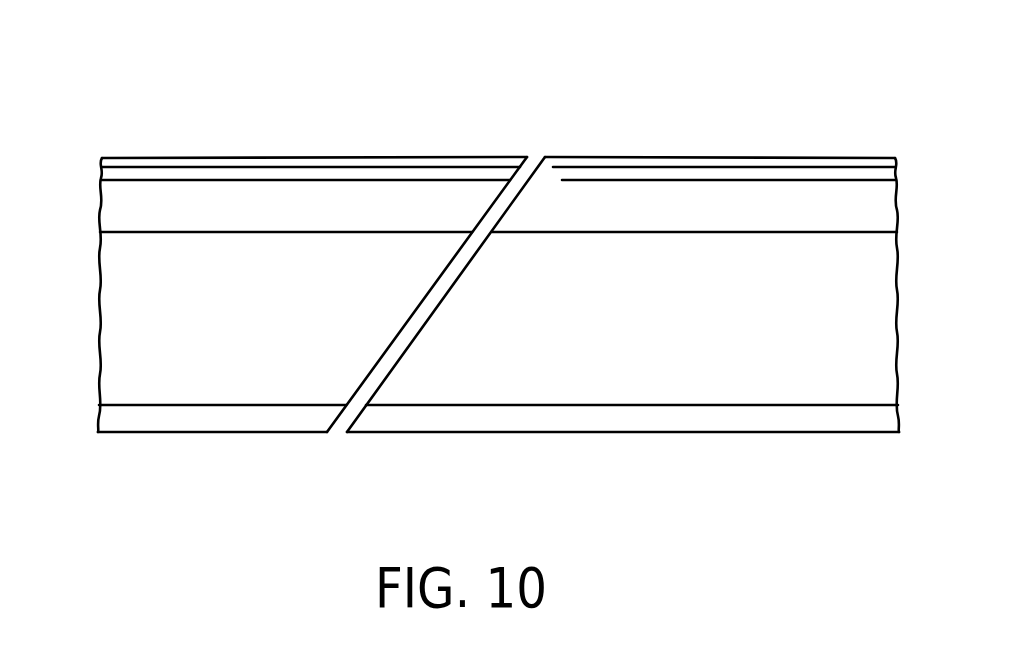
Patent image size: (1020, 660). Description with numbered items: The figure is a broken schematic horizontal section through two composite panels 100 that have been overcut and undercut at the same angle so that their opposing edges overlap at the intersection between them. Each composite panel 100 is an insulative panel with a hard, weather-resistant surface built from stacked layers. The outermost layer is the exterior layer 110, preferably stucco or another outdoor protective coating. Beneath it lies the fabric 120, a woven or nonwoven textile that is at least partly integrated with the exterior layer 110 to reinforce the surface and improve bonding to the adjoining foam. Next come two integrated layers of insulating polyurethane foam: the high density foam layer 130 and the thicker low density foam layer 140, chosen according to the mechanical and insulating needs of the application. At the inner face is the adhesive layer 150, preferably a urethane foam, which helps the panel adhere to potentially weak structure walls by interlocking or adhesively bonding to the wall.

The composite panel 100 is at (288, 104).
The exterior layer 110 is at (168, 163).
The fabric 120 is at (120, 173).
The high density foam layer 130 is at (308, 222).
The low density foam layer 140 is at (270, 335).
The adhesive layer 150 is at (175, 421).